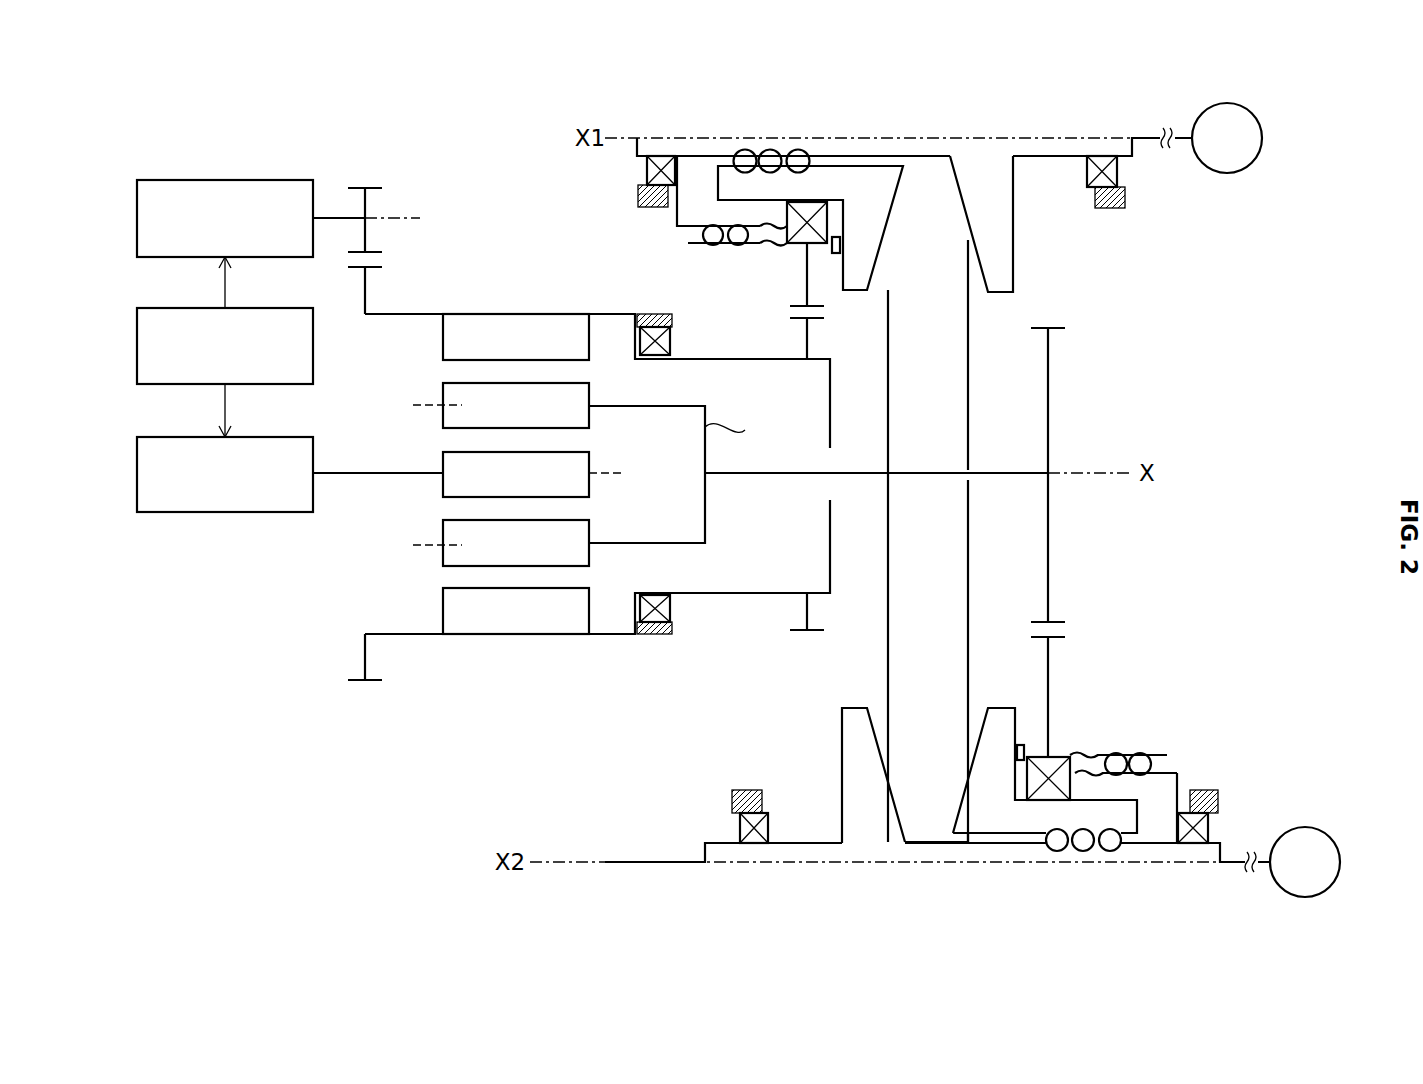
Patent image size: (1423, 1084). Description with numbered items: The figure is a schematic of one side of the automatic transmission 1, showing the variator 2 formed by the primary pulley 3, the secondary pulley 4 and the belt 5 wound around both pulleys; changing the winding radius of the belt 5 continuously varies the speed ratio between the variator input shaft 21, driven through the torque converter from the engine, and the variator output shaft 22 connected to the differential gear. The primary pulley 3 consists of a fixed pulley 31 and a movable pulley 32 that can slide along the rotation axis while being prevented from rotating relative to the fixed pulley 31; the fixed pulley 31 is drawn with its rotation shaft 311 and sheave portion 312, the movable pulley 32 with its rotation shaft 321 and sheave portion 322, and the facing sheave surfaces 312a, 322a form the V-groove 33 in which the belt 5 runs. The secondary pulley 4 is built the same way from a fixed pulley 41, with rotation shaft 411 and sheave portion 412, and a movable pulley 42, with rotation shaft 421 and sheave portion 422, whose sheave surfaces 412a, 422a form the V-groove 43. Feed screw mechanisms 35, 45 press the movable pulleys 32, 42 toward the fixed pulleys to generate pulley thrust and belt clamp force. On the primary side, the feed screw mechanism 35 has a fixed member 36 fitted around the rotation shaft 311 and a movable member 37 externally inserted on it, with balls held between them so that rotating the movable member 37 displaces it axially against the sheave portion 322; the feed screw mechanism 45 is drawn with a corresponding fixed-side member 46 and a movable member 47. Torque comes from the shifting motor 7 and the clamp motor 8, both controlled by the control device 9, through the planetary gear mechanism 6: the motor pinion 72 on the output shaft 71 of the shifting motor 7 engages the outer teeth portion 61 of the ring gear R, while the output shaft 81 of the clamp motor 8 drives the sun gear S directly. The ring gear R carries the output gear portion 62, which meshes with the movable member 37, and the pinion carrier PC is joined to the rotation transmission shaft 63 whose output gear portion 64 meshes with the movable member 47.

The automatic transmission 1 is at (265, 785).
The variator 2 is at (1204, 405).
The primary pulley 3 is at (1058, 298).
The secondary pulley 4 is at (1069, 665).
The belt 5 is at (975, 588).
The planetary gear mechanism 6 is at (487, 250).
The shifting motor 7 is at (137, 213).
The clamp motor 8 is at (137, 467).
The control device 9 is at (137, 340).
The variator input shaft 21 is at (1142, 135).
The variator output shaft 22 is at (652, 865).
The fixed pulley 31 is at (1036, 168).
The movable pulley 32 is at (810, 167).
The V-groove 33 is at (906, 260).
The feed screw mechanism 35 is at (686, 231).
The fixed member 36 is at (674, 213).
The movable member 37 is at (803, 290).
The fixed pulley 41 is at (897, 837).
The movable pulley 42 is at (1045, 837).
The V-groove 43 is at (906, 797).
The feed screw mechanism 45 is at (1161, 755).
The bearing support 46 is at (1178, 768).
The movable member 47 is at (1054, 722).
The outer teeth portion 61 is at (367, 290).
The output gear portion 62 is at (805, 333).
The rotation transmission shaft 63 is at (803, 478).
The output gear portion 64 is at (1046, 527).
The output shaft 71 is at (326, 216).
The motor pinion 72 is at (374, 186).
The output shaft 81 is at (340, 471).
The rotation shaft 311 is at (1079, 147).
The flange portion 312 is at (975, 183).
The sheave surface 312a is at (972, 243).
The rotation shaft 321 is at (772, 185).
The sheave portion 322 is at (743, 88).
The sheave surface 322a is at (877, 268).
The disc portion 411 is at (935, 884).
The flange portion 412 is at (866, 802).
The sheave surface 412a is at (872, 722).
The ball bearing 421 is at (1083, 877).
The flange portion 422 is at (995, 775).
The sheave surface 422a is at (972, 733).